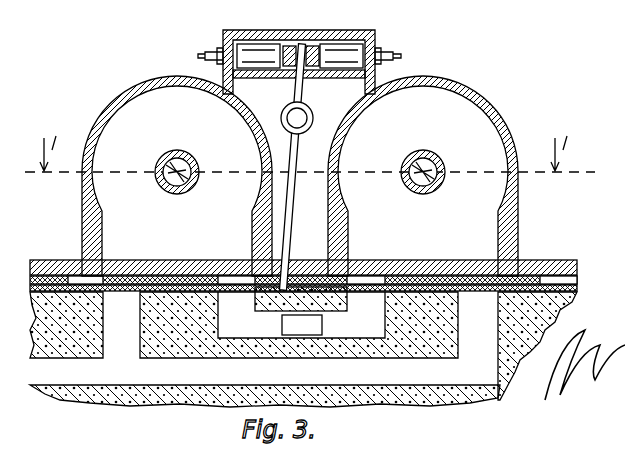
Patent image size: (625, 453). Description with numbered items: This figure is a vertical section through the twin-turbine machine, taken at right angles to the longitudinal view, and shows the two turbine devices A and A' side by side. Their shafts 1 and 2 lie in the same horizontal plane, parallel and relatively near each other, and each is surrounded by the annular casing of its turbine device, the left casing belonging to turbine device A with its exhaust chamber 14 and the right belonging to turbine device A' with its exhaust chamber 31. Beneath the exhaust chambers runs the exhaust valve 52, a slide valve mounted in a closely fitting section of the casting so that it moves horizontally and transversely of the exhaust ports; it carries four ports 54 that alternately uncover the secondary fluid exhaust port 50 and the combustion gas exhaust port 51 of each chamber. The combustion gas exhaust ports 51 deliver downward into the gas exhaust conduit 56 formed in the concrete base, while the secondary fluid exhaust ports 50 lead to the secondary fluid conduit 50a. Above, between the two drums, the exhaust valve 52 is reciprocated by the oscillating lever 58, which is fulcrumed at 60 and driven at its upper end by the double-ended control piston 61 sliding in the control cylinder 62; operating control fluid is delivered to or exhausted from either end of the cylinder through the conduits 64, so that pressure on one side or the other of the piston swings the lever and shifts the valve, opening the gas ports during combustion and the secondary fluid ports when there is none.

The shaft 1 is at (199, 168).
The shaft 2 is at (440, 166).
The exhaust chamber 14 is at (150, 102).
The exhaust chamber 31 is at (455, 118).
The secondary fluid exhaust port 50 is at (240, 293).
The secondary fluid conduit 50a is at (282, 322).
The combustion gas exhaust port 51 is at (112, 286).
The exhaust valve 52 is at (28, 262).
The valve port 54 is at (78, 273).
The gas exhaust conduit 56 is at (265, 384).
The oscillating lever 58 is at (292, 214).
The fulcrum 60 is at (300, 112).
The control piston 61 is at (345, 42).
The control cylinder 62 is at (262, 30).
The conduit 64 is at (213, 54).
The turbine device A is at (174, 171).
The turbine device A' is at (438, 175).